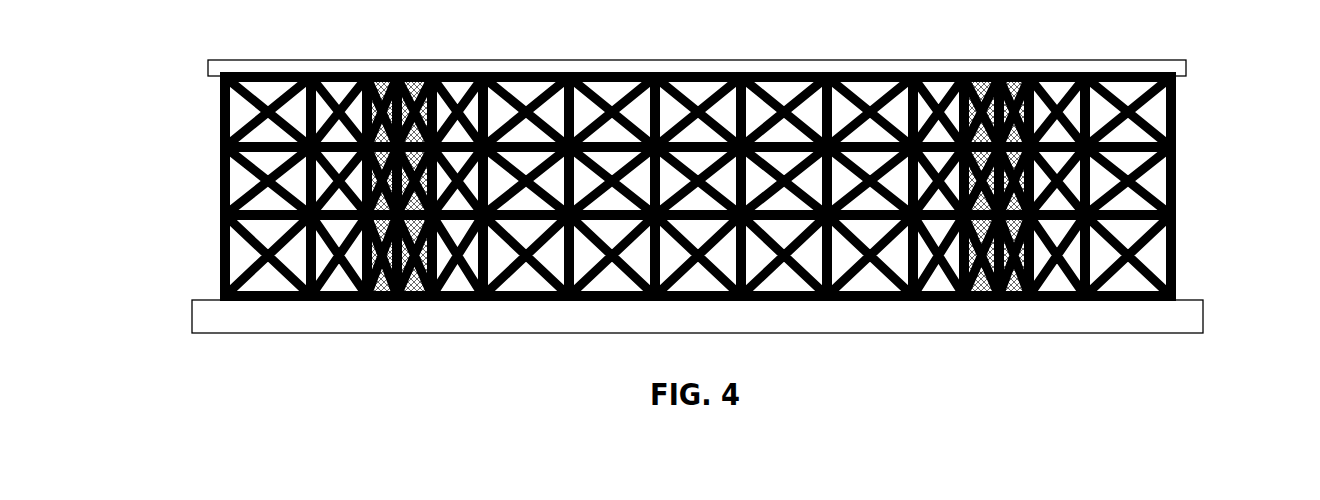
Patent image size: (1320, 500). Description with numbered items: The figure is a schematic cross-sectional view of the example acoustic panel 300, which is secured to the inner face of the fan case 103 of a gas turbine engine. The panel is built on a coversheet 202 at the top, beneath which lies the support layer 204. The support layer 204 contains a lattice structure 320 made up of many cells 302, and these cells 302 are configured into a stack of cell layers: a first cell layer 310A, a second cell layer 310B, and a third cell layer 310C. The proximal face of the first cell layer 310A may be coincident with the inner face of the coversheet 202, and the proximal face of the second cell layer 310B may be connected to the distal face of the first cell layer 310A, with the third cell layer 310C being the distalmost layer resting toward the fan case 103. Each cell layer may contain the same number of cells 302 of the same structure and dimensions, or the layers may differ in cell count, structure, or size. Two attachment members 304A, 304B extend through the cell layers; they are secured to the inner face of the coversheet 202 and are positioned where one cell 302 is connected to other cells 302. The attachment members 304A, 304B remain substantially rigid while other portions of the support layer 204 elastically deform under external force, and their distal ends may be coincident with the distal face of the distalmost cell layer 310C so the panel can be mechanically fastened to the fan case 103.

The acoustic panel 300 is at (185, 27).
The coversheet 202 is at (1100, 60).
The fan case 103 is at (1122, 333).
The support layer 204 is at (702, 245).
The cell 302 is at (1180, 97).
The lattice structure 320 is at (1175, 182).
The first cell layer 310A is at (218, 80).
The second cell layer 310B is at (218, 147).
The third cell layer 310C is at (218, 219).
The attachment member 304A is at (392, 302).
The attachment member 304B is at (1000, 300).